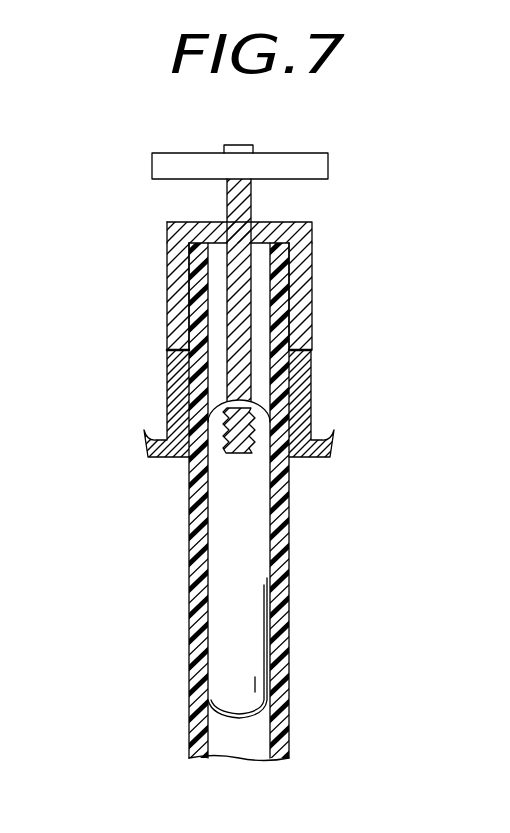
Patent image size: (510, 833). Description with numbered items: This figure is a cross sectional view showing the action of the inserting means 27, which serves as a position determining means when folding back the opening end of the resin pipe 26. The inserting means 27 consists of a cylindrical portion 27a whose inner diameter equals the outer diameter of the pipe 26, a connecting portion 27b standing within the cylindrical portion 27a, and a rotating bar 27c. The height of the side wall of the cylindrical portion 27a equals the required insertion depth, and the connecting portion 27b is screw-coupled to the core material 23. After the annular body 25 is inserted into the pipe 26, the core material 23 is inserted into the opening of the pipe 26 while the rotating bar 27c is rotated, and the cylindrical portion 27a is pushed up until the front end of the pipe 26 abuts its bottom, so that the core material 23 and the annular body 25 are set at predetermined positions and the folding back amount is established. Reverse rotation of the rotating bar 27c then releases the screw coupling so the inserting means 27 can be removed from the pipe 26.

The core material 23 is at (252, 578).
The annular body 25 is at (312, 398).
The resin pipe 26 is at (289, 717).
The inserting means 27 is at (316, 142).
The cylindrical portion 27a is at (313, 248).
The connecting portion 27b is at (227, 300).
The rotating bar 27c is at (328, 180).